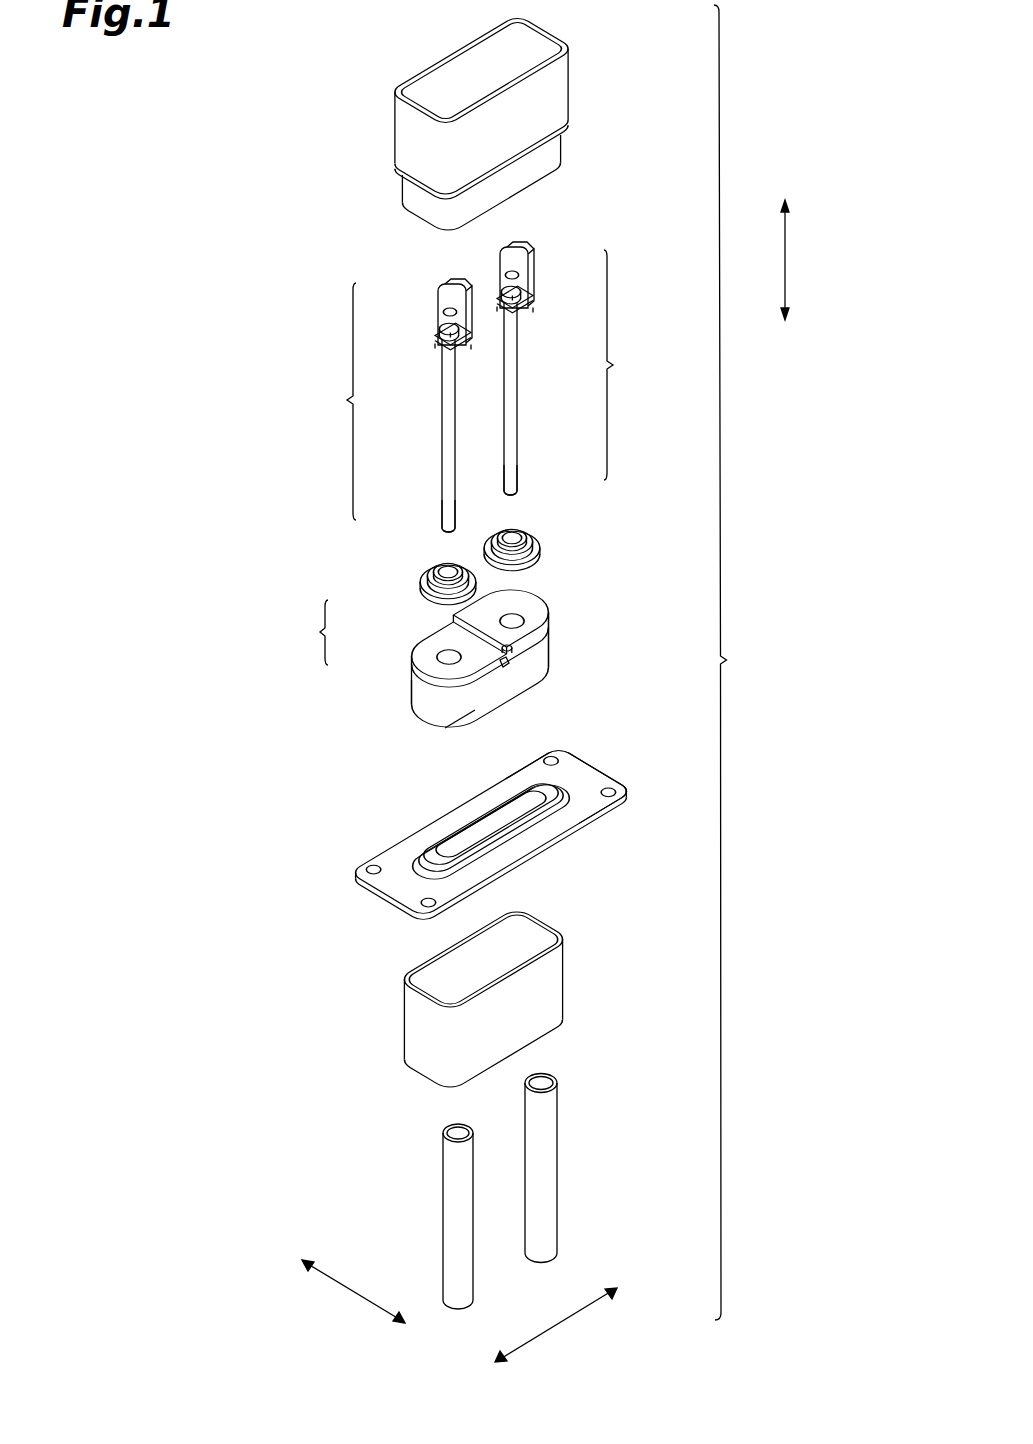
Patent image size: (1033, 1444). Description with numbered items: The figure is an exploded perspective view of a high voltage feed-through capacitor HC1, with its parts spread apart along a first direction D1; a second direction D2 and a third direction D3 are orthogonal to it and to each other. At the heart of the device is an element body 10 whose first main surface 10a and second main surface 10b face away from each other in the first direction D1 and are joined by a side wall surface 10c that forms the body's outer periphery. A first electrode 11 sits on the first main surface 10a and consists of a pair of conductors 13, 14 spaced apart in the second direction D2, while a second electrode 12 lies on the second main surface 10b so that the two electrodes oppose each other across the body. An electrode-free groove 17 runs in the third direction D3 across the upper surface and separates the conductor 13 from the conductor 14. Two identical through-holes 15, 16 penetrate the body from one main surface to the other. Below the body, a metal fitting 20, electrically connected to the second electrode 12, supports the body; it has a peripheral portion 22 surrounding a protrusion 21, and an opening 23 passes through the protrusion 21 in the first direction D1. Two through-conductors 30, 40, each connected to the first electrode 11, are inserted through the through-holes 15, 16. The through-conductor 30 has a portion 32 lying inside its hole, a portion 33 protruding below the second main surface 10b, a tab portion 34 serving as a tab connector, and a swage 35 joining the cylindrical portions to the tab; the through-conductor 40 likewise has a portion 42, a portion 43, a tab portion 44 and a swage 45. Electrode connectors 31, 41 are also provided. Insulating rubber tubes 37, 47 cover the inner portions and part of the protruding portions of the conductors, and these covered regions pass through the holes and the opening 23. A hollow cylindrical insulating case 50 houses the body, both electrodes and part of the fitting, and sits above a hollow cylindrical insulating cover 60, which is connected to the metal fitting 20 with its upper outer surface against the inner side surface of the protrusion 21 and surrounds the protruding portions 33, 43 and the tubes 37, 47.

The element body 10 is at (422, 702).
The first main surface 10a is at (435, 677).
The second main surface 10b is at (458, 742).
The side wall surface 10c is at (428, 718).
The first electrode 11 is at (424, 624).
The second electrode 12 is at (545, 678).
The conductor 13 is at (450, 659).
The conductor 14 is at (454, 626).
The through-hole 15 is at (512, 650).
The through-hole 16 is at (512, 622).
The groove 17 is at (505, 668).
The metal fitting 20 is at (605, 765).
The protrusion 21 is at (425, 830).
The peripheral portion 22 is at (535, 845).
The opening 23 is at (512, 797).
The through-conductor 30 is at (400, 794).
The electrode connector 31 is at (438, 570).
The portion located inside the through-hole 32 is at (450, 362).
The portion protruding from the second main surface 33 is at (447, 510).
The tab portion 34 is at (437, 297).
The swage 35 is at (436, 330).
The insulating tube 37 is at (455, 1132).
The through-conductor 40 is at (562, 752).
The electrode connector 41 is at (525, 533).
The portion located inside the through-hole 42 is at (518, 330).
The portion protruding from the second main surface 43 is at (512, 487).
The tab portion 44 is at (535, 273).
The swage 45 is at (528, 300).
The insulating tube 47 is at (548, 1075).
The insulating case 50 is at (548, 97).
The insulating cover 60 is at (545, 988).
The high voltage feed-through capacitor HC1 is at (752, 662).
The first direction D1 is at (815, 260).
The second direction D2 is at (558, 1328).
The third direction D3 is at (345, 1292).